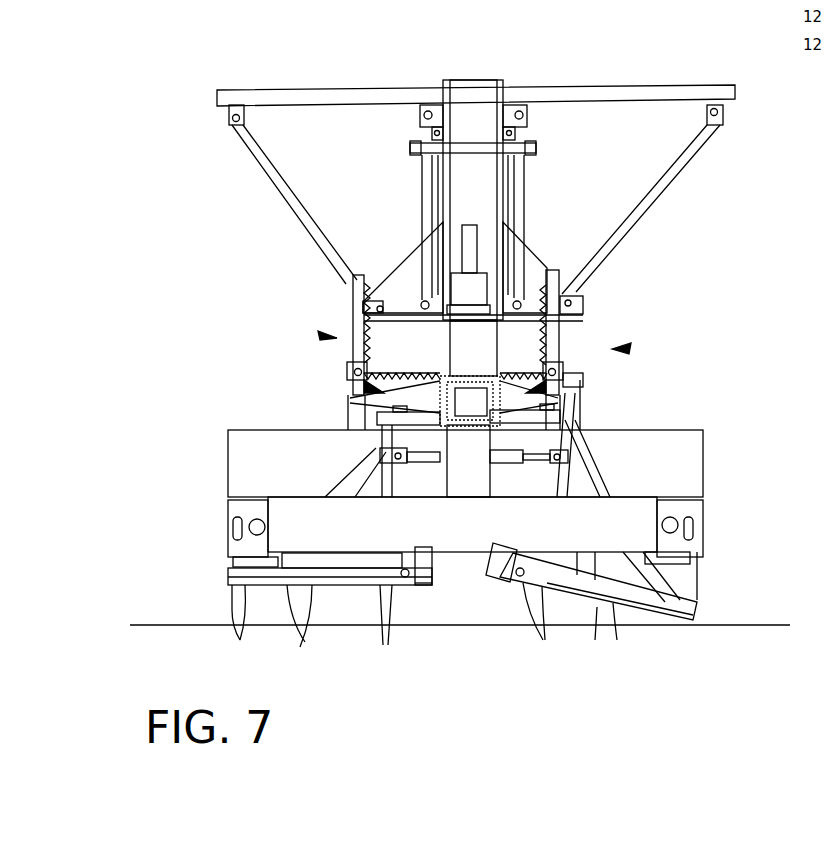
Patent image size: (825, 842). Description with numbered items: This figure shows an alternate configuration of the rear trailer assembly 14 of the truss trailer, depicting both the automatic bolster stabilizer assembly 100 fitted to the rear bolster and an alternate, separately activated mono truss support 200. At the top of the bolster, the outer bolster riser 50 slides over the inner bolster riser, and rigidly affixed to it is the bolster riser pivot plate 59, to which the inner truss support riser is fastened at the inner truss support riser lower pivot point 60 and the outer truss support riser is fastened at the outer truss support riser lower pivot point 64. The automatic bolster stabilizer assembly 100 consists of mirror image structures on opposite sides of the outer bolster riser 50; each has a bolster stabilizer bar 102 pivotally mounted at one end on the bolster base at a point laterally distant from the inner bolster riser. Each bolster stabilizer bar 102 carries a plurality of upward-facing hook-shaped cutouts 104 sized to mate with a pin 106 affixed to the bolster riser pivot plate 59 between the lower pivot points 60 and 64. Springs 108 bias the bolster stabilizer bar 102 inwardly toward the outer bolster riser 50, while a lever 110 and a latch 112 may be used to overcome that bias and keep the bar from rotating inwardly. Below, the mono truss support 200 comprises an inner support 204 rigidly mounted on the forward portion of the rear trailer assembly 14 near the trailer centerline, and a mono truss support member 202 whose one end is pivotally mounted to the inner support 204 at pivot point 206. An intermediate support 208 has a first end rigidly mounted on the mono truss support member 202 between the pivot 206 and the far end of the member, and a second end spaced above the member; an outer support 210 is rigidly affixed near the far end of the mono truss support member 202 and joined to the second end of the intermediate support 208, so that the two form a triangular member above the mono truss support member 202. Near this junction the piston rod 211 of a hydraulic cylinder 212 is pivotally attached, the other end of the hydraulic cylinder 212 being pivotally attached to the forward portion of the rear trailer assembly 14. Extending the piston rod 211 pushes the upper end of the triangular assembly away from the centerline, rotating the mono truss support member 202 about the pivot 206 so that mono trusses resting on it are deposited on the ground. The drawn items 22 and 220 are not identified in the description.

The rear trailer assembly 14 is at (705, 428).
The central mounting block 22 is at (470, 378).
The outer bolster riser 50 is at (478, 82).
The bolster riser pivot plate 59 is at (517, 301).
The inner truss support riser lower pivot point 60 is at (425, 301).
The outer truss support riser lower pivot point 64 is at (583, 300).
The automatic bolster stabilizer assembly 100 is at (330, 336).
The bolster stabilizer bar 102 is at (343, 277).
The hook-shaped cutouts 104 is at (347, 287).
The pin 106 is at (353, 298).
The springs 108 is at (353, 357).
The lever 110 is at (353, 377).
The latch 112 is at (350, 395).
The separately activated mono truss support 200 is at (267, 602).
The mono truss support member 202 is at (312, 612).
The inner support 204 is at (404, 582).
The pivot point 206 is at (408, 586).
The intermediate support 208 is at (372, 585).
The outer support 210 is at (268, 562).
The piston rod 211 is at (562, 447).
The hydraulic cylinder 212 is at (380, 441).
The column lower section 220 is at (417, 395).